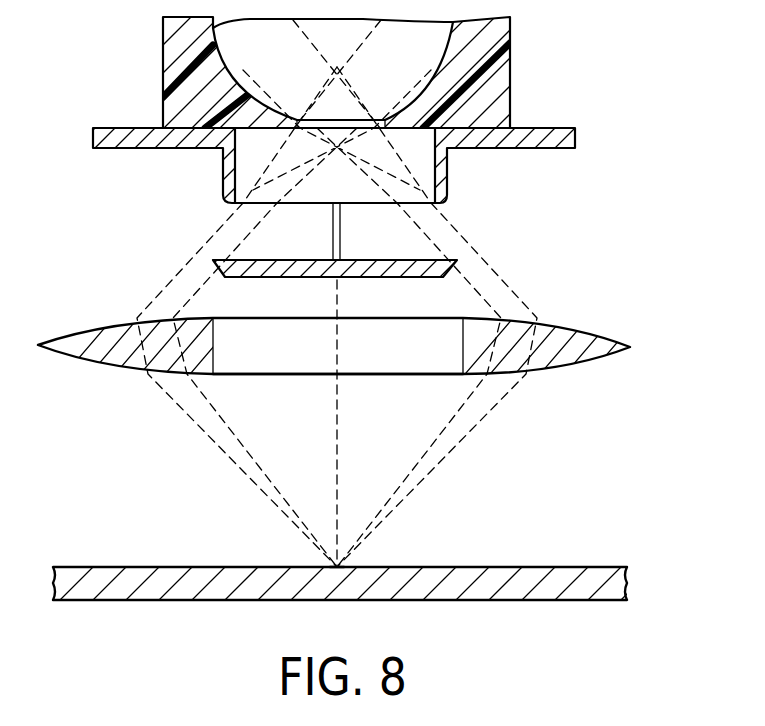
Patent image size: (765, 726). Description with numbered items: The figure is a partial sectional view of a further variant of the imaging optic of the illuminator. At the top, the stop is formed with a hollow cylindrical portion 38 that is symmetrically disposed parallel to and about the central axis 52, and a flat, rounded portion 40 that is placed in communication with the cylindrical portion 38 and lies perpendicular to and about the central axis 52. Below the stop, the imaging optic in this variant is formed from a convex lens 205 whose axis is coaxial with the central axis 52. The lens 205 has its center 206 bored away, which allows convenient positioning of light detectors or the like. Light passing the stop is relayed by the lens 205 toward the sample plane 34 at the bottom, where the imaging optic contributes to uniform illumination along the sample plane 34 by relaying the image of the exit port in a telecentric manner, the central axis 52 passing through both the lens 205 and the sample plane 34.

The sample plane 34 is at (537, 577).
The hollow cylindrical portion 38 is at (567, 147).
The flat rounded portion 40 is at (447, 272).
The central axis 52 is at (337, 612).
The convex lens 205 is at (580, 335).
The center 206 is at (405, 362).